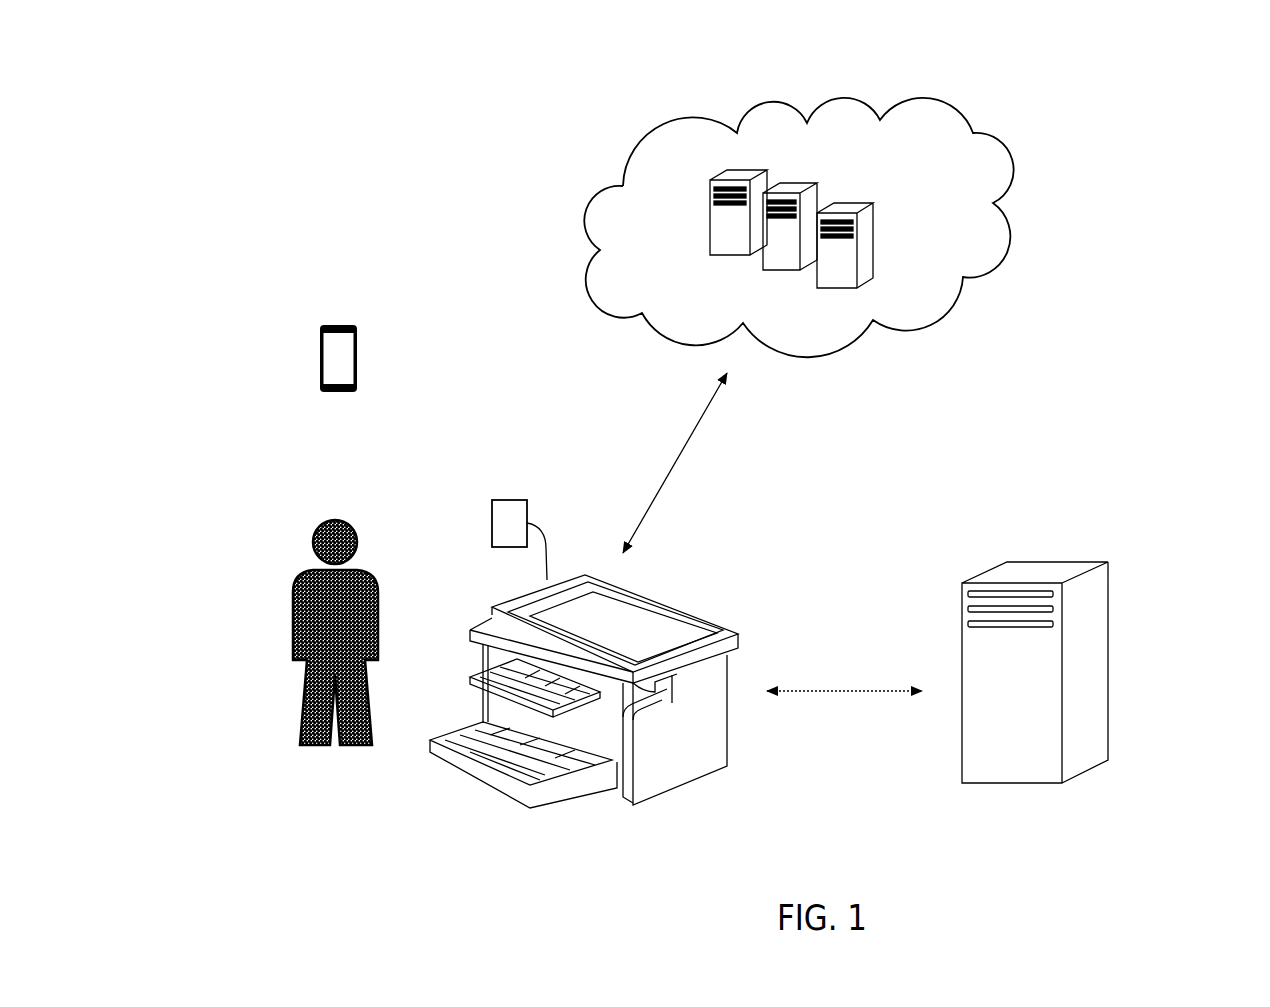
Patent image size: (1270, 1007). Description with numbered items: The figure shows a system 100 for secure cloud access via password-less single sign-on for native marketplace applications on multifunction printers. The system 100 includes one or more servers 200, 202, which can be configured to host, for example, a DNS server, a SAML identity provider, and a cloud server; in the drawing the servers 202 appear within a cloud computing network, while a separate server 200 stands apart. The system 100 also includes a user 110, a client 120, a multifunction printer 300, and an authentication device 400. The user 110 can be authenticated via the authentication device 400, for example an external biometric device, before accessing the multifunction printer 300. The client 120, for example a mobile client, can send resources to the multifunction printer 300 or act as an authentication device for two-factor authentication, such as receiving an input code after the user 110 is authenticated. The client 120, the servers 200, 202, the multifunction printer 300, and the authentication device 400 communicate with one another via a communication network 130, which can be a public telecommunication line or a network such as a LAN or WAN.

The system 100 is at (1257, 68).
The user 110 is at (303, 485).
The client 120 is at (296, 352).
The communication network 130 is at (653, 430).
The server 200 is at (1132, 610).
The server 202 is at (685, 182).
The multifunction printer 300 is at (733, 602).
The authentication device 400 is at (478, 490).